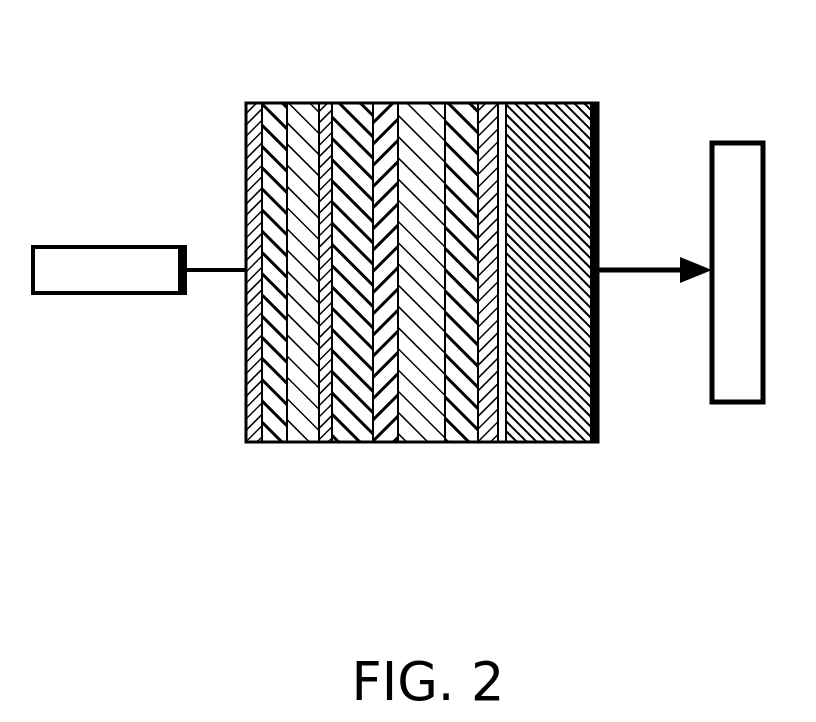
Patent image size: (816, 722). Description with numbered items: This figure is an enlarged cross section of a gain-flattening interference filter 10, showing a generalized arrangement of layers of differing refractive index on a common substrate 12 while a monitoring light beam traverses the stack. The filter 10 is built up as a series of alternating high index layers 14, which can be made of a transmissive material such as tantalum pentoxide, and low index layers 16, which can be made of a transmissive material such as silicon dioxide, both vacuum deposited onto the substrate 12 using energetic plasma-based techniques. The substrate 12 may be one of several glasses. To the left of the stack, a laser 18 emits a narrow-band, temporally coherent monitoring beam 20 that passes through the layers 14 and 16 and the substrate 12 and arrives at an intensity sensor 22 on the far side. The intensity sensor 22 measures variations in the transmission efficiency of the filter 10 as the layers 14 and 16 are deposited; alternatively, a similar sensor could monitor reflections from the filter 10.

The gain-flattening interference filter 10 is at (614, 126).
The substrate 12 is at (565, 442).
The high index layers 14 is at (488, 442).
The low index layers 16 is at (302, 103).
The laser 18 is at (118, 293).
The monitoring beam 20 is at (687, 280).
The intensity sensor 22 is at (722, 402).